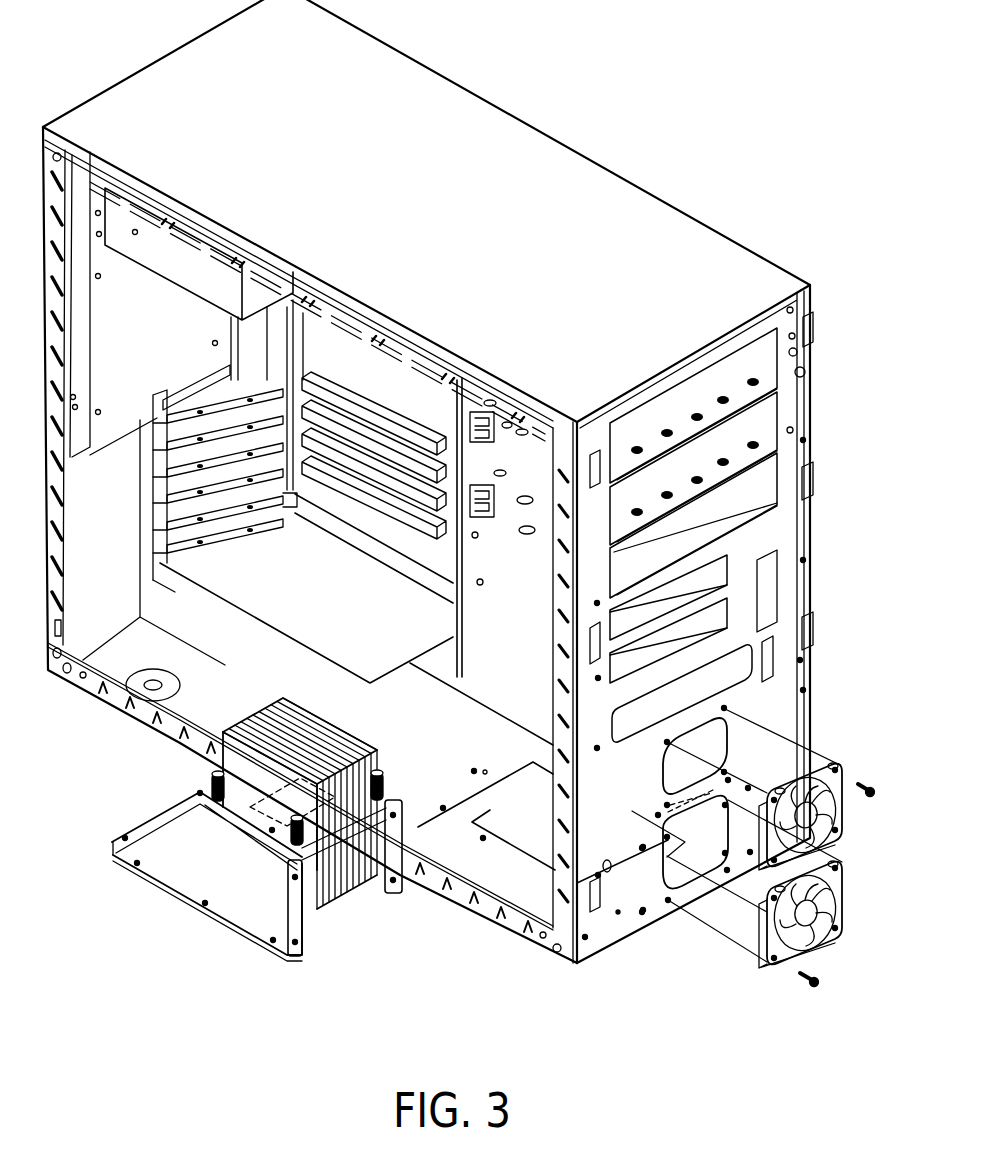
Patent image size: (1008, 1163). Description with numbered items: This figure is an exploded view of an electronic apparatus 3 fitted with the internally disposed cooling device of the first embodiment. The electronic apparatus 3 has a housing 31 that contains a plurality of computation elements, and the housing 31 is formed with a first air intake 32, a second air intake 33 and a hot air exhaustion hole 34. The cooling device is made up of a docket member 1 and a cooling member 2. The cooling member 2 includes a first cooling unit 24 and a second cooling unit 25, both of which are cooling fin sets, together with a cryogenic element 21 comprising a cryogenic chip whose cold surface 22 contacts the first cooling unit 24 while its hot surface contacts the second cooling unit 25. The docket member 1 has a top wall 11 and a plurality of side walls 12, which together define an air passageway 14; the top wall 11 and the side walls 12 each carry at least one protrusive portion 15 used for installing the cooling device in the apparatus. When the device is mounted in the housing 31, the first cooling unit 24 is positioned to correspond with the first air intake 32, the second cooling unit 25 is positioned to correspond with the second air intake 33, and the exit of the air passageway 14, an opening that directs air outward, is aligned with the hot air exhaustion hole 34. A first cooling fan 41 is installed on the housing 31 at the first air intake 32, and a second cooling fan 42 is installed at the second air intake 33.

The docket member 1 is at (189, 911).
The top wall 11 is at (196, 818).
The side walls 12 is at (180, 860).
The air passageway 14 is at (393, 890).
The protrusive portion 15 is at (297, 924).
The cooling member 2 is at (350, 903).
The cryogenic element 21 is at (222, 765).
The cold surface 22 is at (282, 792).
The first cooling unit 24 is at (238, 762).
The second cooling unit 25 is at (336, 898).
The electronic apparatus 3 is at (548, 136).
The housing 31 is at (770, 540).
The first air intake 32 is at (716, 742).
The second air intake 33 is at (694, 873).
The hot air exhaustion hole 34 is at (525, 805).
The first cooling fan 41 is at (836, 835).
The second cooling fan 42 is at (836, 935).